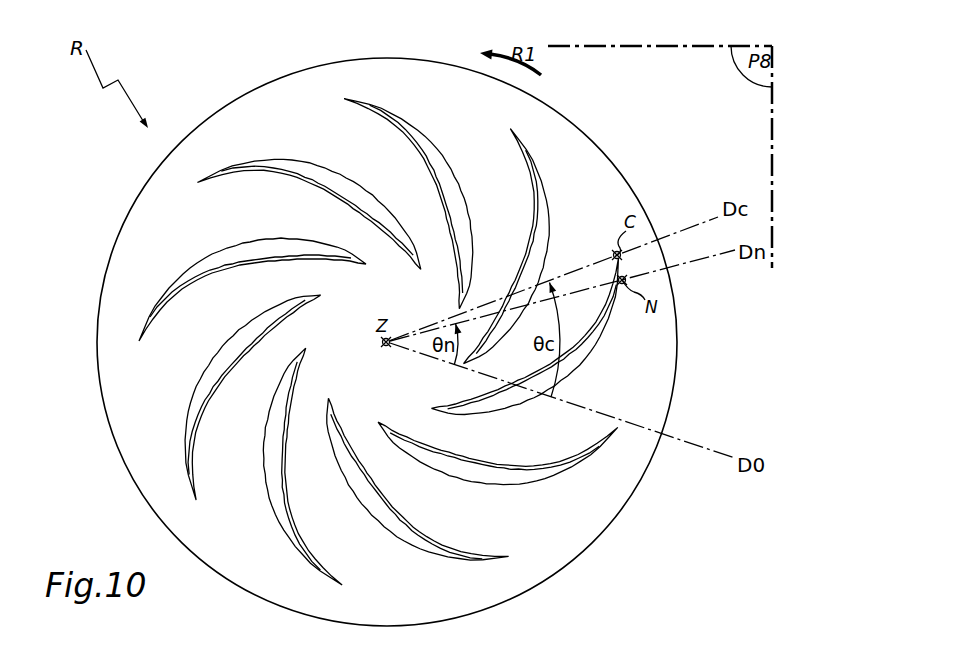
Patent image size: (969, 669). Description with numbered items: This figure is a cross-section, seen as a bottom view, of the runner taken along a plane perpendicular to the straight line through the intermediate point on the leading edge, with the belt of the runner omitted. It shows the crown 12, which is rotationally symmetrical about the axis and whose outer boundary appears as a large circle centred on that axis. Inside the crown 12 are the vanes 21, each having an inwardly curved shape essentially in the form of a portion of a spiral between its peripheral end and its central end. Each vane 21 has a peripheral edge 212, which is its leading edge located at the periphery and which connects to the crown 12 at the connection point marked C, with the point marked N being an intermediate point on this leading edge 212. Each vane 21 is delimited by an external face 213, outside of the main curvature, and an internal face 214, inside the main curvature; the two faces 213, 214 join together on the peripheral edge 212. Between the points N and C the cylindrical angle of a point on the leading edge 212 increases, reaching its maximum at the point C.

The crown 12 is at (261, 112).
The vane 21 is at (202, 265).
The peripheral edge 212 is at (626, 270).
The external face 213 is at (558, 196).
The internal face 214 is at (524, 180).